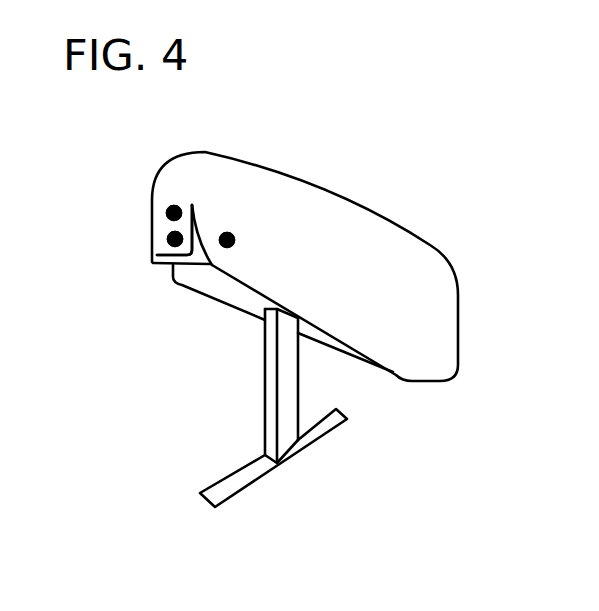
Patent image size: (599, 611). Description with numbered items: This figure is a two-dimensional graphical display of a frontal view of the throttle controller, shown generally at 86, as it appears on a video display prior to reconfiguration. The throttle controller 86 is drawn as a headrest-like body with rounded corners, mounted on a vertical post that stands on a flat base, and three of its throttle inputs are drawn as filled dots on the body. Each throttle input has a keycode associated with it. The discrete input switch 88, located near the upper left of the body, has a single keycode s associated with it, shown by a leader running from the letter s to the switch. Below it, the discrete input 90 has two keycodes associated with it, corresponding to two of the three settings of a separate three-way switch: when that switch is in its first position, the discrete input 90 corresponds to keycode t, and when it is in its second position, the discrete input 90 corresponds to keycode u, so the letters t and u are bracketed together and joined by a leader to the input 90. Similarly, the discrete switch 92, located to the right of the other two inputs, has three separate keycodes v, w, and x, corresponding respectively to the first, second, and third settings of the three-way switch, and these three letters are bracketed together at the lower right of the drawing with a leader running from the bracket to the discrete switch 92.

The throttle controller frontal view 86 is at (215, 399).
The discrete input switch 88 is at (183, 212).
The discrete input 90 is at (169, 244).
The discrete switch 92 is at (235, 240).
The keycode s is at (173, 206).
The keycode t is at (169, 237).
The keycode u is at (105, 213).
The keycode v is at (433, 515).
The keycode w is at (227, 240).
The keycode x is at (433, 515).